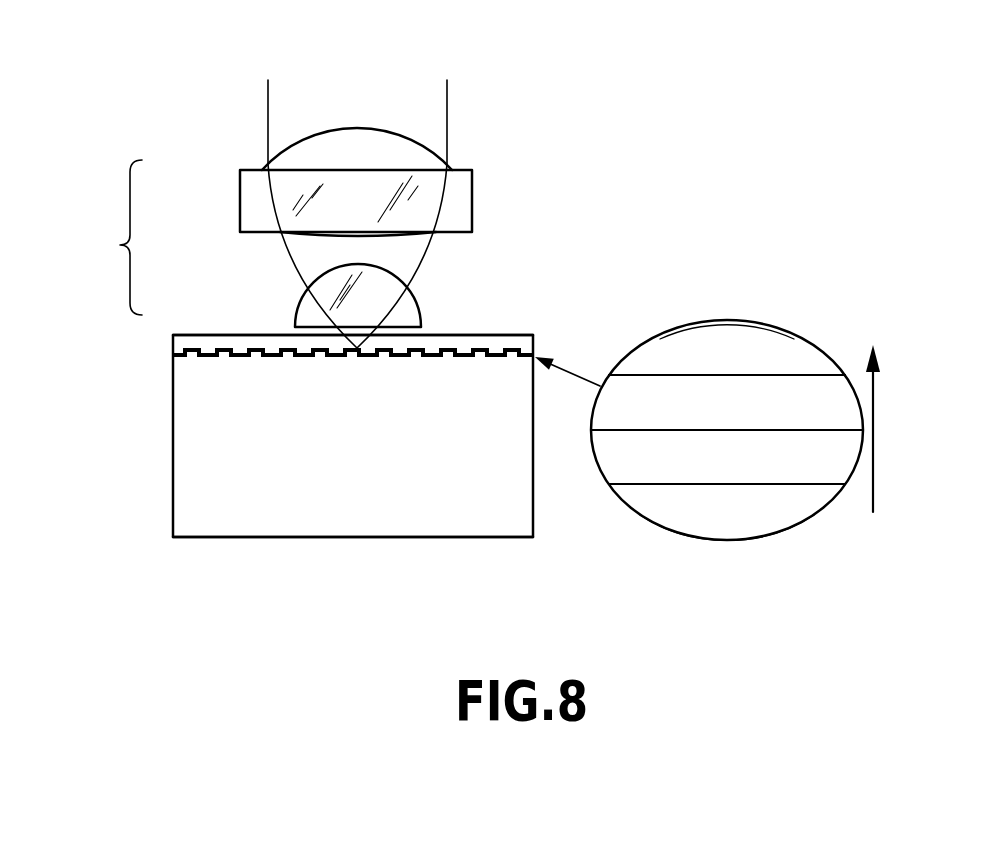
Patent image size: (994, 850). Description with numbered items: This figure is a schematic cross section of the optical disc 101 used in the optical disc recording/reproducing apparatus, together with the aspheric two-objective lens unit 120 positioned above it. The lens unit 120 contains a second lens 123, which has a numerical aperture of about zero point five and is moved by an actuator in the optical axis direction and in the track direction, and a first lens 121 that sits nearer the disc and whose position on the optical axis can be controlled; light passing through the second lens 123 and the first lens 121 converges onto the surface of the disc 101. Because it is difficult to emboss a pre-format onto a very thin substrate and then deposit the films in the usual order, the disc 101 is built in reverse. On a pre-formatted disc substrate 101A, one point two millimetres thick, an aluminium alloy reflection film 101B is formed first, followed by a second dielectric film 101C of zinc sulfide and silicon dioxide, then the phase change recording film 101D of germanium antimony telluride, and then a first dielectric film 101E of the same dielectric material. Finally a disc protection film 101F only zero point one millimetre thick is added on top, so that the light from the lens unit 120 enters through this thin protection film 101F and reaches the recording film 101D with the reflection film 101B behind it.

The aspheric two-objective lens unit 120 is at (108, 260).
The second lens 123 is at (240, 201).
The first lens 121 is at (297, 310).
The optical disc 101 is at (147, 483).
The disc substrate 101A is at (504, 538).
The aluminium alloy reflection film 101B is at (748, 528).
The second dielectric film 101C is at (820, 475).
The recording film 101D is at (845, 402).
The first dielectric film 101E is at (763, 335).
The disc protection film 101F is at (515, 335).